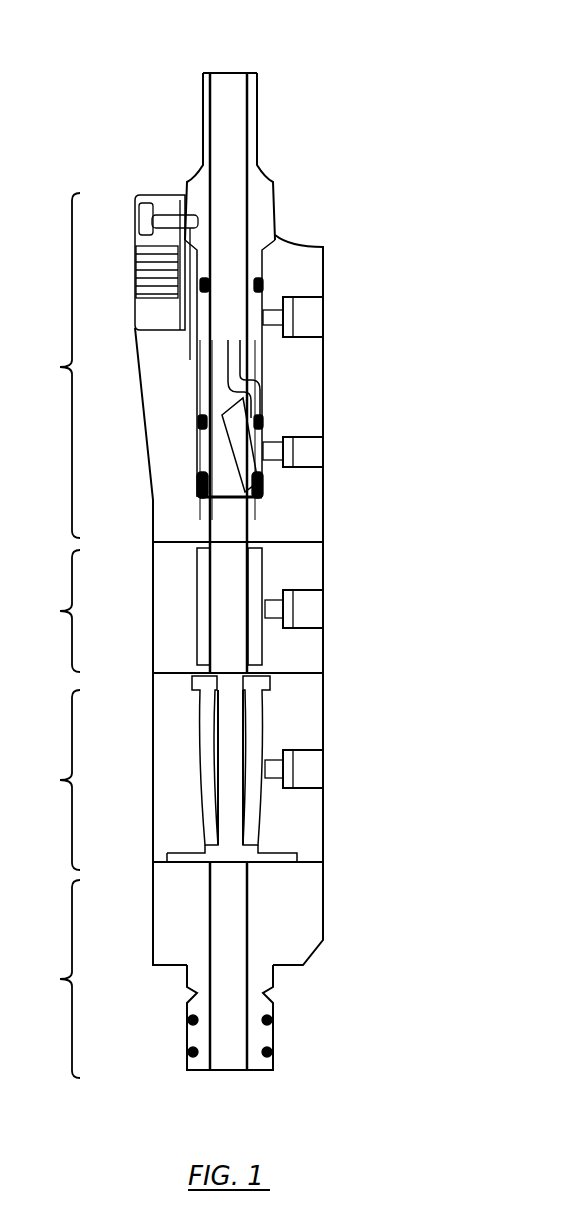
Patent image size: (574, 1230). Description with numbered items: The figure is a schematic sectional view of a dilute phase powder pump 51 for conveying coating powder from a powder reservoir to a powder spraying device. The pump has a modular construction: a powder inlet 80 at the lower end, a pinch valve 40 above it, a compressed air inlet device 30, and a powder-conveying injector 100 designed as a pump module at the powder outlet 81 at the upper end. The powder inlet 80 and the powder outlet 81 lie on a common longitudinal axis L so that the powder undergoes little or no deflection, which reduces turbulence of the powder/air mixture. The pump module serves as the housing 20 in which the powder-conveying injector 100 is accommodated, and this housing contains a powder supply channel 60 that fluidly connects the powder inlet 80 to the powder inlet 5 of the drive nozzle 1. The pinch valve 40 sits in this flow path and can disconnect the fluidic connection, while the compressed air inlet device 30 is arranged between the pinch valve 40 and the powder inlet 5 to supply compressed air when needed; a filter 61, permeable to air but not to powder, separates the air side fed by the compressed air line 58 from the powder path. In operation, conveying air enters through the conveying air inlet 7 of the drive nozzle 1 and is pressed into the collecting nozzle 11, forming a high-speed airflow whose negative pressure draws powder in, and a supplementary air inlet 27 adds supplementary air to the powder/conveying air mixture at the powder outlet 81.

The drive nozzle 1 is at (232, 430).
The powder inlet of the drive nozzle 5 is at (240, 495).
The conveying air inlet 7 is at (305, 447).
The collecting nozzle 11 is at (245, 357).
The pump housing 20 is at (300, 268).
The supplementary air inlet 27 is at (305, 325).
The compressed air inlet device 30 is at (257, 607).
The pinch valve 40 is at (175, 773).
The dilute phase powder pump 51 is at (474, 91).
The compressed air line 58 is at (310, 610).
The powder supply channel 60 is at (240, 978).
The filter 61 is at (255, 580).
The powder inlet 80 is at (220, 970).
The powder outlet 81 is at (197, 97).
The powder-conveying injector 100 is at (43, 376).
The longitudinal axis L is at (228, 85).